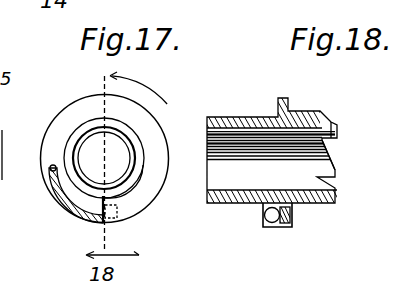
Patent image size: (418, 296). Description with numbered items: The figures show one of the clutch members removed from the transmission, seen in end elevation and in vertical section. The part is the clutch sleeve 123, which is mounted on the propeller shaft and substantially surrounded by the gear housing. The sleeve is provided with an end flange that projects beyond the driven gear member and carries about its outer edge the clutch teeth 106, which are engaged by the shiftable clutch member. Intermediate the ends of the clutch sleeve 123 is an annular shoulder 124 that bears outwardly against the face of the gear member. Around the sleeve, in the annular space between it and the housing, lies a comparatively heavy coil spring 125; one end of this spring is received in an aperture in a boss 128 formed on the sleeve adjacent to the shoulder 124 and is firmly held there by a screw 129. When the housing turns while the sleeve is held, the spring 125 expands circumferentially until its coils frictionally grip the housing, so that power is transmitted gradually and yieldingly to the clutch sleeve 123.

In FIG. 18, the clutch teeth 106 is at (332, 162).
In FIG. 17, the clutch sleeve 123 is at (125, 185).
In FIG. 18, the clutch sleeve 123 is at (235, 203).
In FIG. 17, the annular shoulder 124 is at (57, 128).
In FIG. 18, the annular shoulder 124 is at (281, 98).
In FIG. 17, the coil spring 125 is at (66, 208).
In FIG. 17, the boss 128 is at (122, 205).
In FIG. 18, the boss 128 is at (271, 227).
In FIG. 18, the screw 129 is at (292, 218).